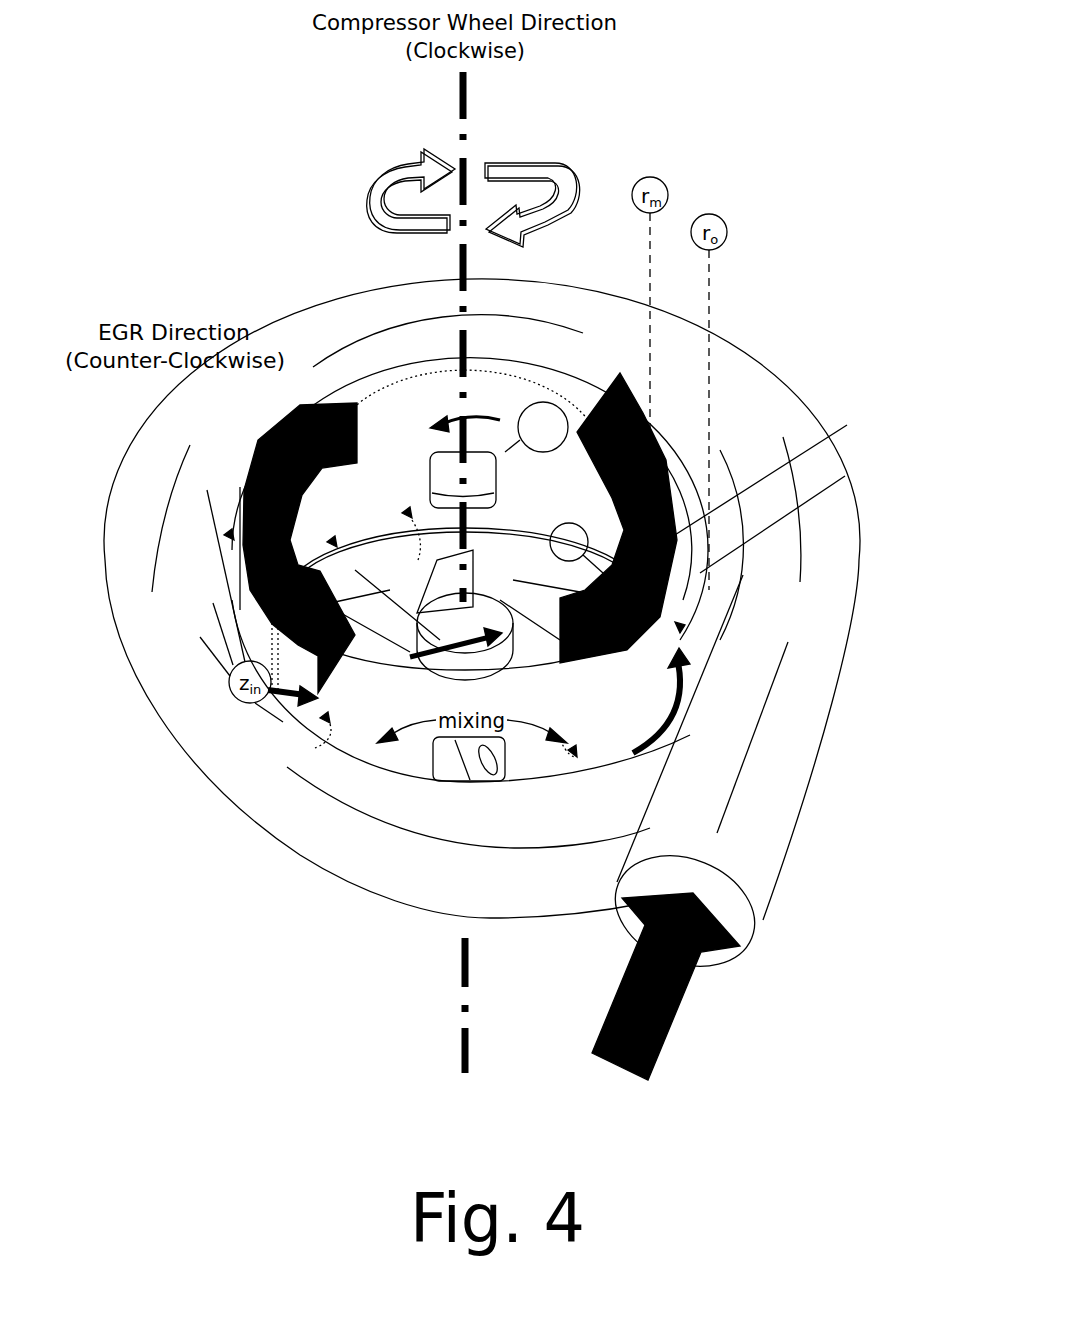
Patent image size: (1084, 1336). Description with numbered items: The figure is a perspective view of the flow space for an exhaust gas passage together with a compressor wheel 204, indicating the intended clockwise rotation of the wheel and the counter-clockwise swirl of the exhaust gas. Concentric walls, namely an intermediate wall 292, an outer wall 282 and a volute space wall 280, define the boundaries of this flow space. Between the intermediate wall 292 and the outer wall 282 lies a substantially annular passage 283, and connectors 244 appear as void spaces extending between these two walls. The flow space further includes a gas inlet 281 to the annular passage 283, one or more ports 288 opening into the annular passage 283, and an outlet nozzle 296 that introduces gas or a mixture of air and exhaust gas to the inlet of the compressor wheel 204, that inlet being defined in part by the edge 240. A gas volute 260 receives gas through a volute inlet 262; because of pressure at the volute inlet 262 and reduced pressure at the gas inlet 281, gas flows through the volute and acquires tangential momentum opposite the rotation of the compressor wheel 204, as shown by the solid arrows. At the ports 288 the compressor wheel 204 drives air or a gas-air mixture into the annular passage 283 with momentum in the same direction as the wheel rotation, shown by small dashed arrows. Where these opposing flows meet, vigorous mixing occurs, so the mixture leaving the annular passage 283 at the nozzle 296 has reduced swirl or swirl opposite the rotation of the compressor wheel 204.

The compressor wheel 204 is at (443, 597).
The edge 240 is at (407, 423).
The connectors 244 is at (460, 474).
The gas volute 260 is at (767, 367).
The volute inlet 262 is at (750, 925).
The volute space wall 280 is at (740, 597).
The gas inlet 281 is at (240, 610).
The outer wall 282 is at (845, 476).
The annular passage 283 is at (232, 472).
The ports 288 is at (512, 532).
The intermediate wall 292 is at (847, 425).
The outlet nozzle 296 is at (507, 423).